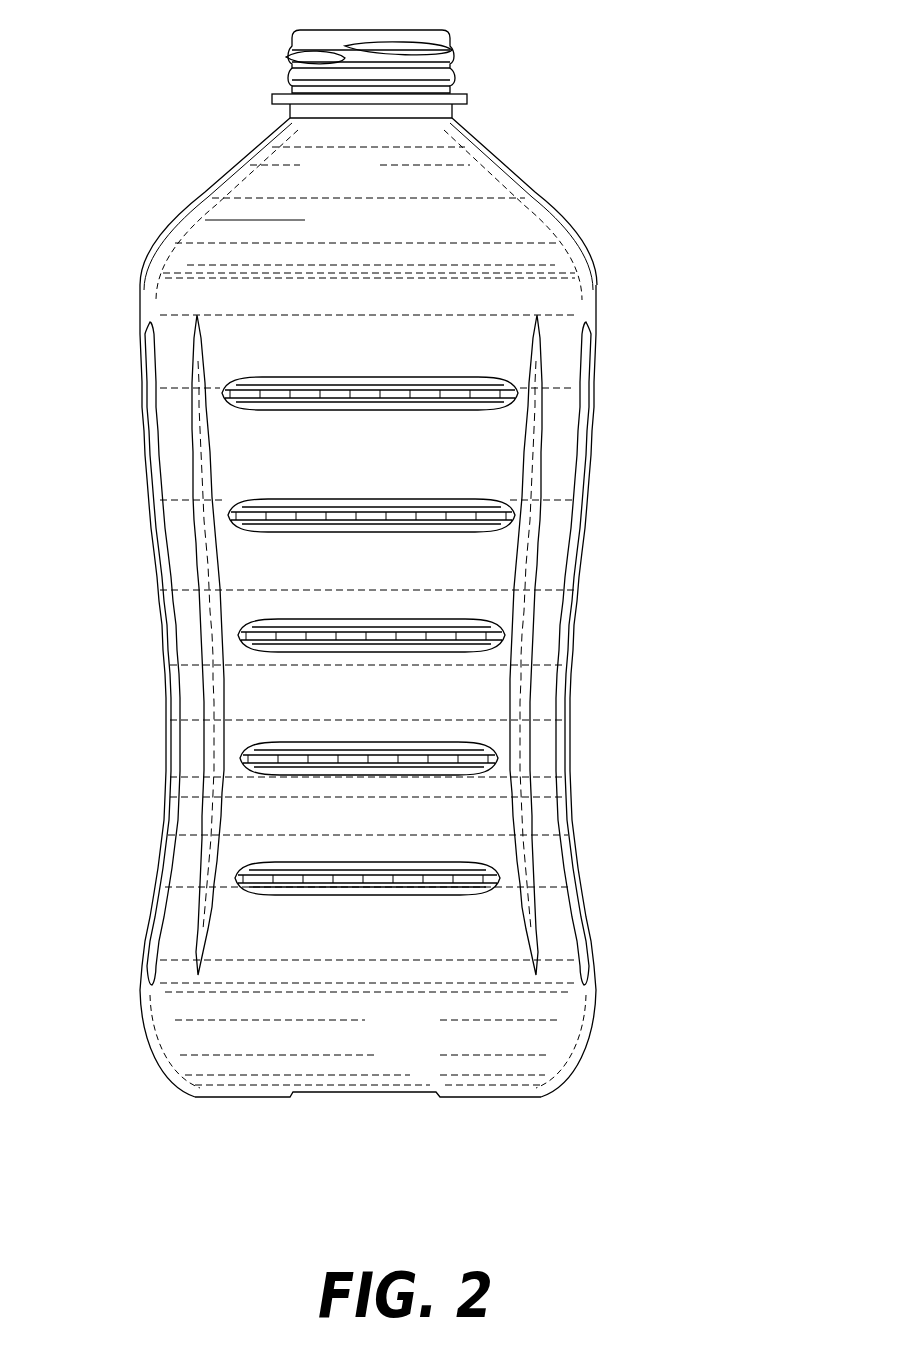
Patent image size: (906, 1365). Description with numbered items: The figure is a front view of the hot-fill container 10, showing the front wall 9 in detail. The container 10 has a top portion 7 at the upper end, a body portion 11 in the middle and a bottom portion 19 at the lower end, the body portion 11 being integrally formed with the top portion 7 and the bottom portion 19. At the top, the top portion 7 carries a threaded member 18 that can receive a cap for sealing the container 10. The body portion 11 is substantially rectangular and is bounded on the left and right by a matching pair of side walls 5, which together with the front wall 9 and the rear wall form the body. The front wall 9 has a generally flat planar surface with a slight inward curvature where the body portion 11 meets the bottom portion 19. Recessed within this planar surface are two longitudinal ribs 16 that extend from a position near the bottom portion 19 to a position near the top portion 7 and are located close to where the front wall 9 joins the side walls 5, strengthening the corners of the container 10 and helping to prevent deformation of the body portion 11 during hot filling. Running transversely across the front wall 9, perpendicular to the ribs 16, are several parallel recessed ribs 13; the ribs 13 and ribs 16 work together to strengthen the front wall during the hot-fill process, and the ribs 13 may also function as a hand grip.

The side wall 5 is at (158, 590).
The top portion 7 is at (253, 185).
The front wall 9 is at (470, 925).
The container 10 is at (645, 214).
The body portion 11 is at (180, 297).
The transverse ribs 13 is at (498, 380).
The longitudinal ribs 16 is at (213, 483).
The threaded member 18 is at (450, 38).
The bottom portion 19 is at (440, 1097).